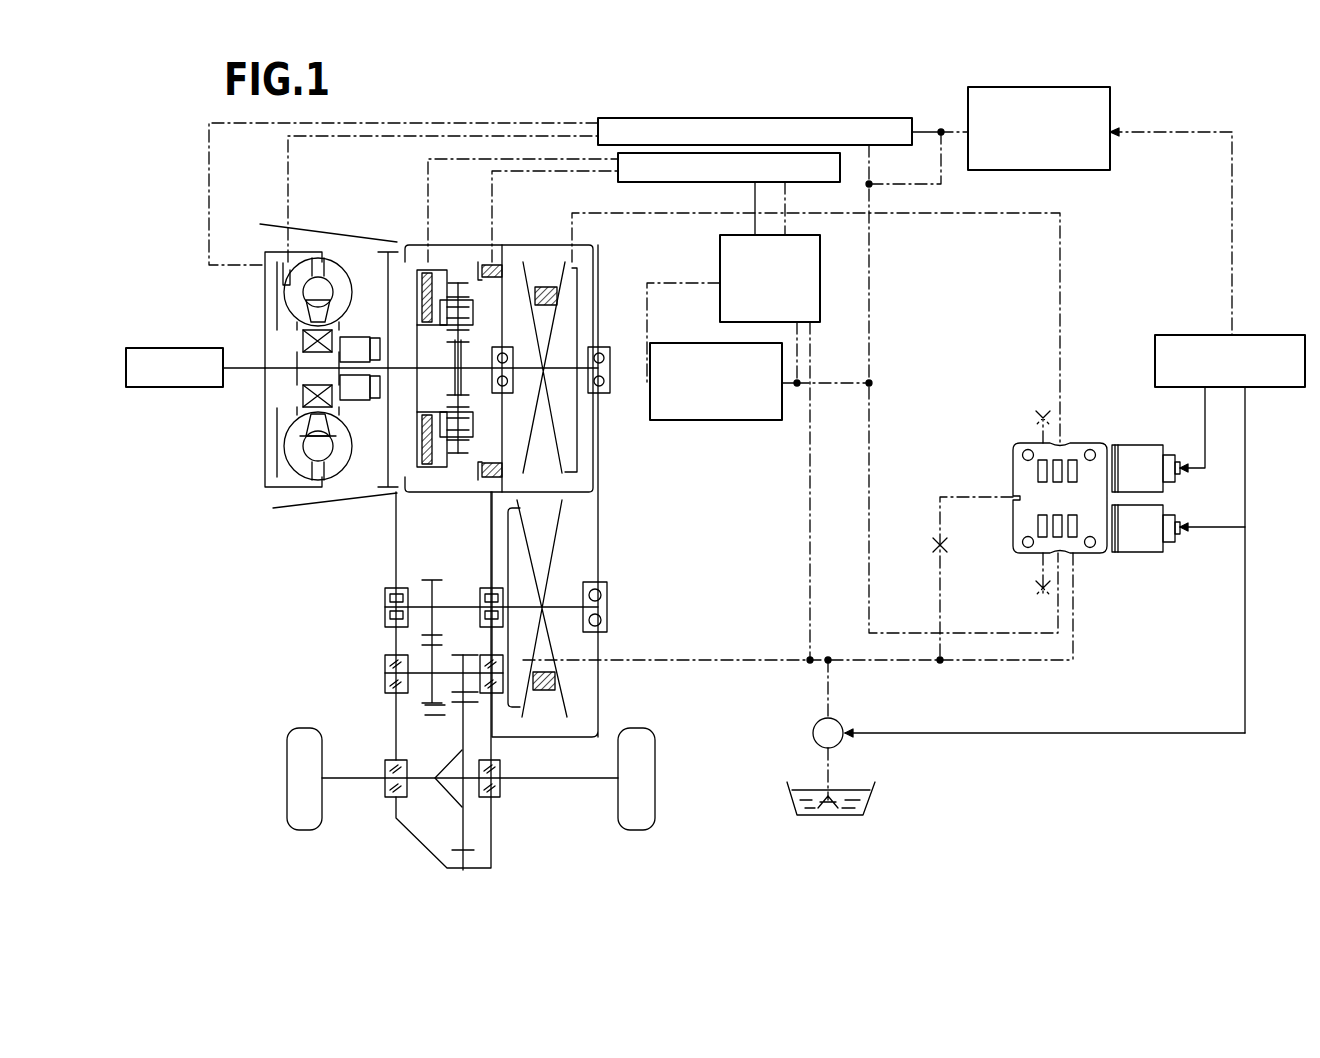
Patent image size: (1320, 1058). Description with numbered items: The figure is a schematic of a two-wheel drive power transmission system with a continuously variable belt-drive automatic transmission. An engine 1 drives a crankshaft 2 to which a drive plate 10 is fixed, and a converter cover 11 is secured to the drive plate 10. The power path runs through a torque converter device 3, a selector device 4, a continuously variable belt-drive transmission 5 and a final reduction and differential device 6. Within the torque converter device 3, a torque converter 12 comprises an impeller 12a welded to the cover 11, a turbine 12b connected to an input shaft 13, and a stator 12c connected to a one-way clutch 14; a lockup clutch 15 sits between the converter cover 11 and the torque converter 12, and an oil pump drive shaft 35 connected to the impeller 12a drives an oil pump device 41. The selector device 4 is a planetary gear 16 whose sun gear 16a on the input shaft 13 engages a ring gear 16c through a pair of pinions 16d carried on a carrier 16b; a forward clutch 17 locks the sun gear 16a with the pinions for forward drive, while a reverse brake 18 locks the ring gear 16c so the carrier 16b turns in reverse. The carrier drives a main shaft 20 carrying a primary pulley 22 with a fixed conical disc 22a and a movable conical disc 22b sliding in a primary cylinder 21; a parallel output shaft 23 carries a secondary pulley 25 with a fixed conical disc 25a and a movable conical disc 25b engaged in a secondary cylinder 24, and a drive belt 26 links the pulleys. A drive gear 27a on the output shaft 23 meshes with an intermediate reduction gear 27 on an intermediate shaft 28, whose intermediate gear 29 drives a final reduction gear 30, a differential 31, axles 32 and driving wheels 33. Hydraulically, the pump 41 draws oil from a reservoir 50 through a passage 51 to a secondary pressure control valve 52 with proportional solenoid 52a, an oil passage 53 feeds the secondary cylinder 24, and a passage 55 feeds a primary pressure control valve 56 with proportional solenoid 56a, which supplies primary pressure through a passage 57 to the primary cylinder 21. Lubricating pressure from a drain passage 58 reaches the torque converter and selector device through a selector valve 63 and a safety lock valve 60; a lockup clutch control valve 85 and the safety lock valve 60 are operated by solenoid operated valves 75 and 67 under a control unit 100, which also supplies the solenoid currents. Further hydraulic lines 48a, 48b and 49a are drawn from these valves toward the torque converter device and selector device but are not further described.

The engine 1 is at (166, 388).
The crankshaft 2 is at (243, 378).
The torque converter device 3 is at (336, 262).
The selector device 4 is at (434, 266).
The continuously variable belt-drive transmission 5 is at (553, 261).
The final reduction and differential device 6 is at (438, 837).
The drive plate 10 is at (263, 337).
The converter cover 11 is at (285, 254).
The torque converter 12 is at (352, 262).
The impeller 12a is at (340, 305).
The turbine 12b is at (284, 308).
The stator 12c is at (360, 338).
The input shaft 13 is at (388, 380).
The one-way clutch 14 is at (300, 342).
The lockup clutch 15 is at (270, 292).
The planetary gear 16 is at (454, 264).
The sun gear 16a is at (453, 340).
The carrier 16b is at (473, 318).
The ring gear 16c is at (478, 262).
The pinions 16d is at (473, 442).
The forward clutch 17 is at (417, 262).
The reverse brake 18 is at (490, 263).
The main shaft 20 is at (505, 393).
The primary cylinder 21 is at (578, 292).
The primary pulley 22 is at (541, 264).
The fixed conical disc 22a is at (530, 300).
The axially movable conical disc 22b is at (550, 440).
The output shaft 23 is at (446, 592).
The secondary cylinder 24 is at (508, 545).
The secondary pulley 25 is at (548, 592).
The fixed conical disc 25a is at (567, 700).
The movable conical disc 25b is at (520, 522).
The drive belt 26 is at (543, 692).
The intermediate reduction gear 27 is at (437, 705).
The drive gear 27a is at (432, 580).
The intermediate shaft 28 is at (415, 677).
The intermediate gear 29 is at (478, 648).
The final reduction gear 30 is at (462, 868).
The differential 31 is at (447, 792).
The axles 32 is at (355, 778).
The driving wheels 33 is at (287, 775).
The oil pump drive shaft 35 is at (345, 384).
The oil pump device 41 is at (370, 428).
The hydraulic line 48a is at (209, 170).
The hydraulic line 48b is at (288, 170).
The hydraulic line 49a is at (428, 177).
The reservoir 50 is at (868, 792).
The passage 51 is at (1028, 662).
The secondary pressure control valve 52 is at (1105, 546).
The proportional solenoid 52a is at (1148, 550).
The oil passage 53 is at (718, 658).
The passage 55 is at (941, 522).
The primary pressure control valve 56 is at (1105, 445).
The proportional solenoid 56a is at (1158, 445).
The passage 57 is at (1060, 322).
The drain passage 58 is at (869, 292).
The safety lock valve 60 is at (720, 275).
The selector valve 63 is at (817, 183).
The solenoid operated valve 67 is at (762, 420).
The solenoid operated valve 75 is at (1058, 172).
The lockup clutch control valve 85 is at (815, 118).
The control unit 100 is at (1248, 335).